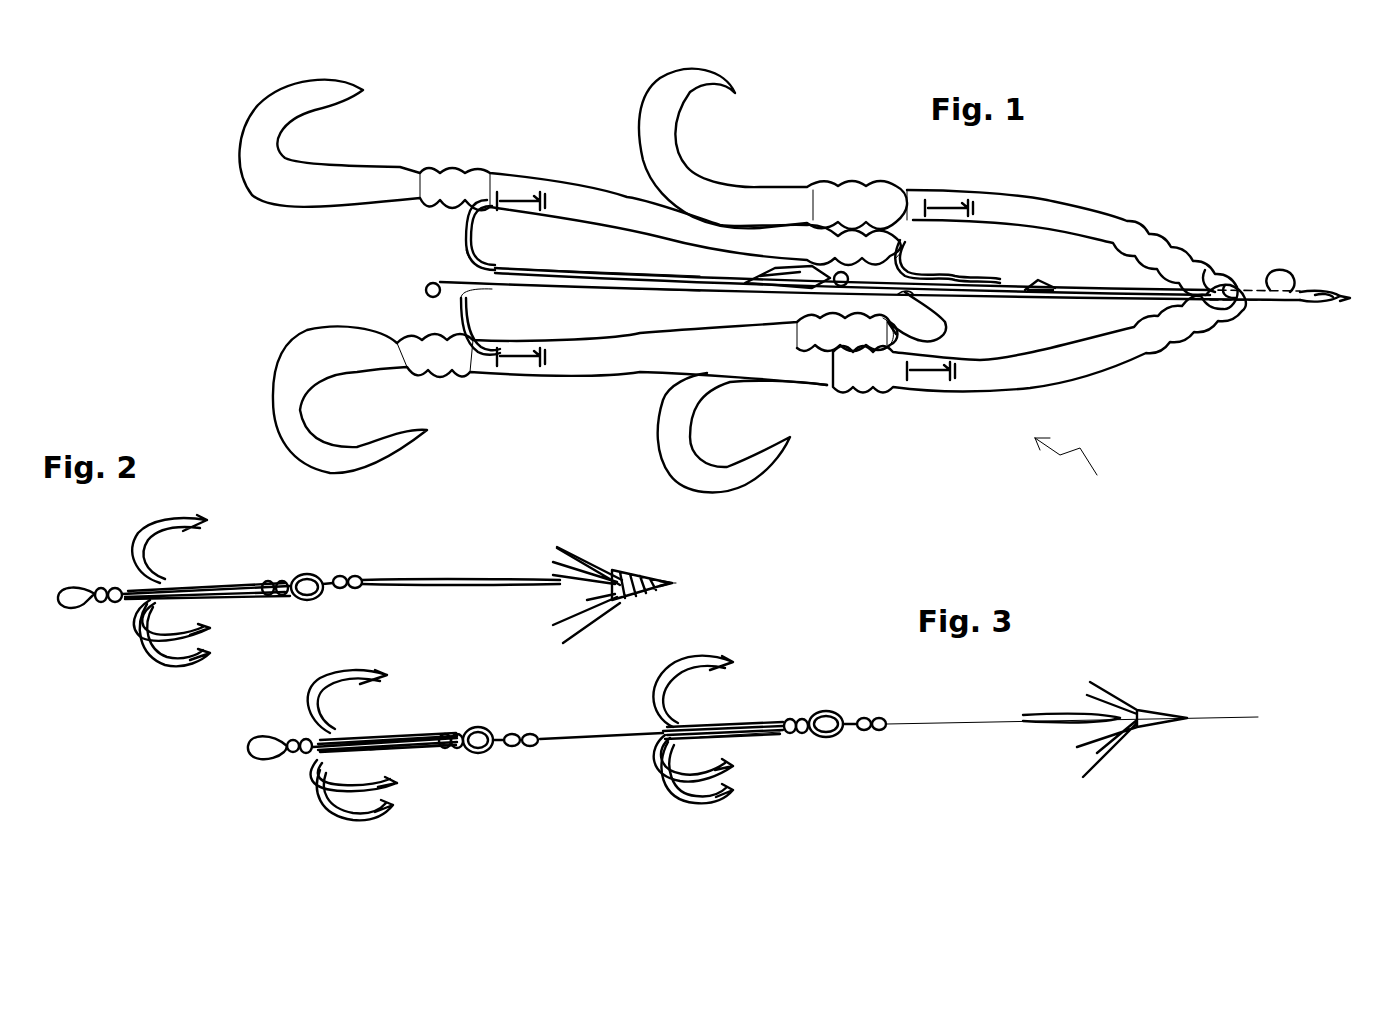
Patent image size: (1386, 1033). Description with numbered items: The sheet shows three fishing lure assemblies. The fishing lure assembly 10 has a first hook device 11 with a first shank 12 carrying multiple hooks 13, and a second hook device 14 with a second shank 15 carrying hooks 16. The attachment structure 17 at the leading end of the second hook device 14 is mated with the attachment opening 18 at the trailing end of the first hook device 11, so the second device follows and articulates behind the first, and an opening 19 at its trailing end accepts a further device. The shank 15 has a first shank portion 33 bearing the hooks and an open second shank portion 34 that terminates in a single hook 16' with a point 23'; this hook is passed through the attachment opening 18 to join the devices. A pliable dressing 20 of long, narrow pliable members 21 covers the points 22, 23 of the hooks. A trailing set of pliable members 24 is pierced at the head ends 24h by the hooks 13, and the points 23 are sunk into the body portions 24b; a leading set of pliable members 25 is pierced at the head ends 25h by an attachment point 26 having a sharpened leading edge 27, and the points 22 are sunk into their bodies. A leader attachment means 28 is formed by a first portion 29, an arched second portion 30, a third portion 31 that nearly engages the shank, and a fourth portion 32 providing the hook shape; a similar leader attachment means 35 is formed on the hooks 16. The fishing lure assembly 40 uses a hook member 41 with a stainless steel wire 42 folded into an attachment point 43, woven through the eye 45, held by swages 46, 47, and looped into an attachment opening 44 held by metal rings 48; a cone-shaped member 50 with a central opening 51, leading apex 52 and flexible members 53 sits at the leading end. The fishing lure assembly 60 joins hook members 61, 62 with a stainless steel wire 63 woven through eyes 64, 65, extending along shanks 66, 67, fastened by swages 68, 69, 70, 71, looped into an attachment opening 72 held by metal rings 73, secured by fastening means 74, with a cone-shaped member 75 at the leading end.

In FIG. 1, the fishing lure assembly 10 is at (1082, 471).
In FIG. 1, the first hook device 11 is at (1035, 286).
In FIG. 1, the first shank 12 is at (1084, 298).
In FIG. 1, the hooks 13 is at (907, 222).
In FIG. 1, the second hook device 14 is at (605, 270).
In FIG. 1, the second shank 15 is at (578, 287).
In FIG. 1, the hooks 16 is at (471, 363).
In FIG. 1, the single hook 16' is at (479, 195).
In FIG. 1, the attachment structure 17 is at (812, 266).
In FIG. 1, the attachment opening 18 is at (841, 272).
In FIG. 1, the opening 19 is at (428, 284).
In FIG. 1, the pliable dressing 20 is at (1090, 216).
In FIG. 1, the pliable members 21 is at (1025, 210).
In FIG. 1, the points 22 is at (968, 375).
In FIG. 1, the points 23 is at (526, 397).
In FIG. 1, the point 23' is at (532, 174).
In FIG. 1, the trailing set of pliable members 24 is at (595, 190).
In FIG. 1, the body portions 24b is at (515, 178).
In FIG. 1, the head ends 24h is at (913, 248).
In FIG. 1, the leading set of pliable members 25 is at (1130, 360).
In FIG. 1, the head ends 25h is at (1210, 270).
In FIG. 1, the attachment point 26 is at (1322, 304).
In FIG. 1, the sharpened leading edge 27 is at (1343, 305).
In FIG. 1, the leader attachment means 28 is at (950, 272).
In FIG. 1, the first portion 29 is at (955, 294).
In FIG. 1, the second portion 30 is at (928, 324).
In FIG. 1, the third portion 31 is at (910, 330).
In FIG. 1, the fourth portion 32 is at (895, 303).
In FIG. 1, the first shank portion 33 is at (609, 286).
In FIG. 1, the second shank portion 34 is at (540, 267).
In FIG. 1, the leader attachment means 35 is at (495, 292).
In FIG. 2, the fishing lure assembly 40 is at (326, 538).
In FIG. 2, the hook member 41 is at (200, 588).
In FIG. 2, the stainless steel wire 42 is at (405, 580).
In FIG. 2, the attachment point 43 is at (542, 585).
In FIG. 2, the attachment opening 44 is at (85, 604).
In FIG. 2, the eye 45 is at (316, 596).
In FIG. 2, the swage 46 is at (345, 576).
In FIG. 2, the swage 47 is at (276, 581).
In FIG. 2, the metal rings 48 is at (105, 588).
In FIG. 2, the cone-shaped member 50 is at (632, 575).
In FIG. 2, the central opening 51 is at (660, 581).
In FIG. 2, the leading apex 52 is at (672, 584).
In FIG. 2, the flexible members 53 is at (592, 566).
In FIG. 3, the fishing lure assembly 60 is at (852, 818).
In FIG. 3, the hook member 61 is at (738, 722).
In FIG. 3, the hook member 62 is at (392, 732).
In FIG. 3, the stainless steel wire 63 is at (572, 735).
In FIG. 3, the eye 64 is at (830, 711).
In FIG. 3, the eye 65 is at (476, 728).
In FIG. 3, the shank 66 is at (750, 738).
In FIG. 3, the shank 67 is at (407, 750).
In FIG. 3, the swage 68 is at (875, 717).
In FIG. 3, the swage 69 is at (795, 718).
In FIG. 3, the swage 70 is at (528, 750).
In FIG. 3, the swage 71 is at (462, 750).
In FIG. 3, the attachment opening 72 is at (265, 760).
In FIG. 3, the metal rings 73 is at (300, 738).
In FIG. 3, the fastening means 74 is at (330, 737).
In FIG. 3, the cone-shaped member 75 is at (1158, 706).